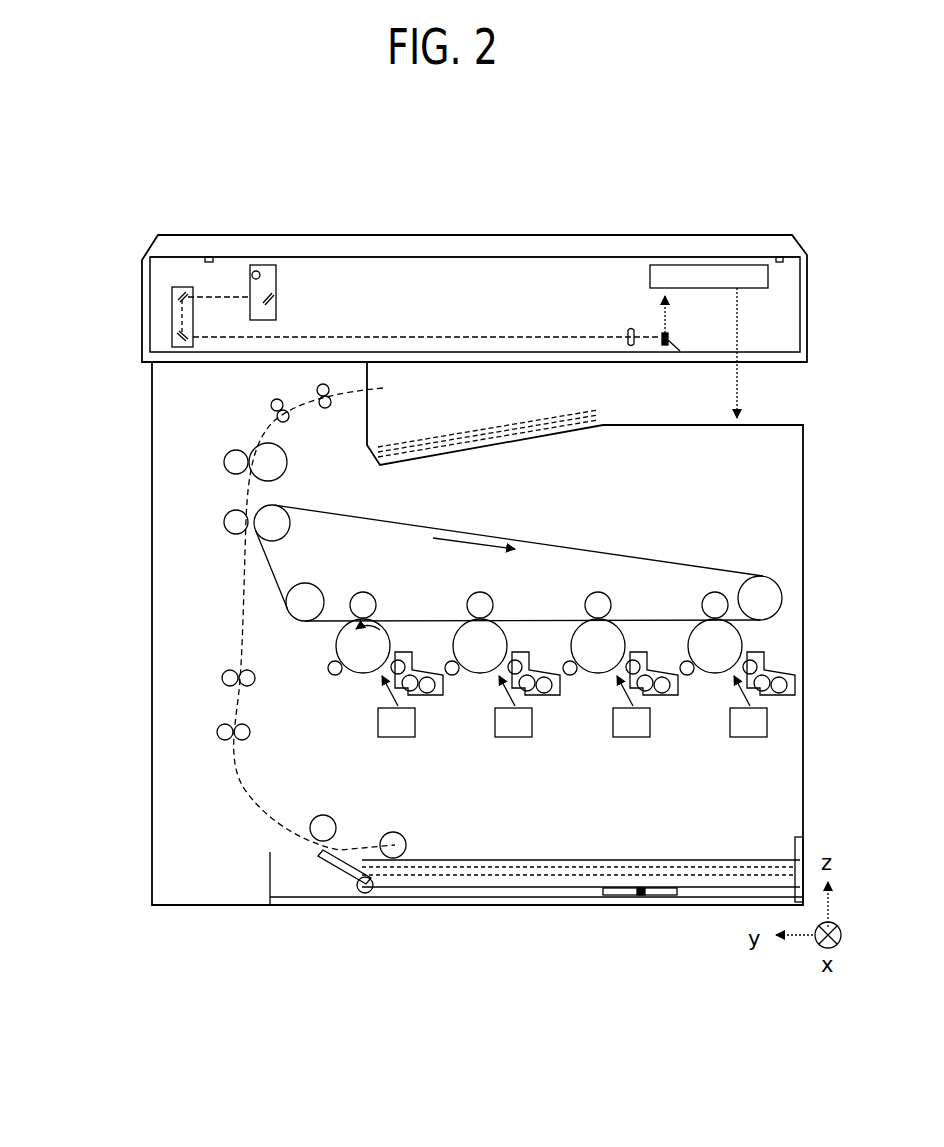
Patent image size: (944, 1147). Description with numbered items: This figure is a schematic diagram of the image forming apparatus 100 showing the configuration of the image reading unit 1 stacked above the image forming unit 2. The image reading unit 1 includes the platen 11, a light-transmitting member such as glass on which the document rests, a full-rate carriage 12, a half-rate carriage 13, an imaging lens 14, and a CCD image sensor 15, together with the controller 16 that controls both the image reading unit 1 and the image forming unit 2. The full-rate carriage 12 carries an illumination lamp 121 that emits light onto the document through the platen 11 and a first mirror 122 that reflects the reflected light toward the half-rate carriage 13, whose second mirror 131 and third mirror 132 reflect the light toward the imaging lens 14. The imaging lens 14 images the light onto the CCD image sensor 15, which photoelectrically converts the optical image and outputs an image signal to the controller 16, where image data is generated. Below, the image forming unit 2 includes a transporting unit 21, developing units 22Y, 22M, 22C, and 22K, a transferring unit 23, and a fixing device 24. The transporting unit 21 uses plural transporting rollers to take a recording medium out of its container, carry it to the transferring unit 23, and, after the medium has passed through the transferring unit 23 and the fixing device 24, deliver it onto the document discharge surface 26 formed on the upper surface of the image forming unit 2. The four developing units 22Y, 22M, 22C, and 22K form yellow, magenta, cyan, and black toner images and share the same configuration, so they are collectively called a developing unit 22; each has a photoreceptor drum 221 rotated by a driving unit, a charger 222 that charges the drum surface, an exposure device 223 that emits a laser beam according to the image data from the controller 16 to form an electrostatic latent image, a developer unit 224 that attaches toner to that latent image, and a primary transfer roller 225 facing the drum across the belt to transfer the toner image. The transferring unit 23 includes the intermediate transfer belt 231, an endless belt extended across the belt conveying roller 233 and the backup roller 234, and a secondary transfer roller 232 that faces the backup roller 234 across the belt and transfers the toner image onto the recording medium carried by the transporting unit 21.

The image forming apparatus 100 is at (140, 226).
The image reading unit 1 is at (90, 252).
The platen 11 is at (540, 258).
The full-rate carriage 12 is at (277, 308).
The illumination lamp 121 is at (250, 277).
The first mirror 122 is at (274, 296).
The half-rate carriage 13 is at (172, 347).
The second mirror 131 is at (172, 296).
The third mirror 132 is at (173, 340).
The imaging lens 14 is at (630, 330).
The CCD image sensor 15 is at (669, 335).
The controller 16 is at (650, 277).
The image forming unit 2 is at (135, 368).
The transporting unit 21 is at (312, 424).
The developing unit 22 is at (743, 790).
The developing unit 22K is at (357, 726).
The developing unit 22C is at (474, 726).
The developing unit 22M is at (592, 726).
The developing unit 22Y is at (709, 726).
The photoreceptor drum 221 is at (362, 674).
The charger 222 is at (332, 675).
The exposure device 223 is at (395, 738).
The developer unit 224 is at (444, 690).
The primary transfer roller 225 is at (376, 600).
The transferring unit 23 is at (209, 502).
The intermediate transfer belt 231 is at (592, 529).
The secondary transfer roller 232 is at (238, 525).
The belt conveying roller 233 is at (288, 600).
The backup roller 234 is at (285, 525).
The fixing device 24 is at (213, 444).
The document discharge surface 26 is at (603, 425).